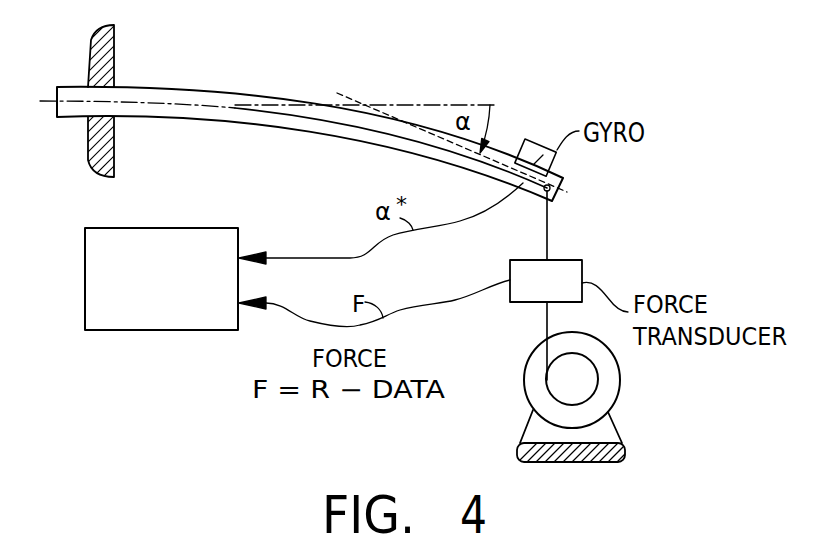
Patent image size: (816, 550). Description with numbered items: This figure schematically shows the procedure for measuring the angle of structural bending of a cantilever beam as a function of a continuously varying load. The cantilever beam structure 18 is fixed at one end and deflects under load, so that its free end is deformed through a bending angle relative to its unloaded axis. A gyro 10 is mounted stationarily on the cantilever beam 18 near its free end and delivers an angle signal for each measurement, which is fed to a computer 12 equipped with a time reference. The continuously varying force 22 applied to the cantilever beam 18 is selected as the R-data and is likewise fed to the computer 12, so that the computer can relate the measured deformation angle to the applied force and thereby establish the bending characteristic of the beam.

The gyro 10 is at (530, 140).
The computer 12 is at (85, 288).
The cantilever beam structure 18 is at (188, 92).
The continuously varying force F 22 is at (547, 224).